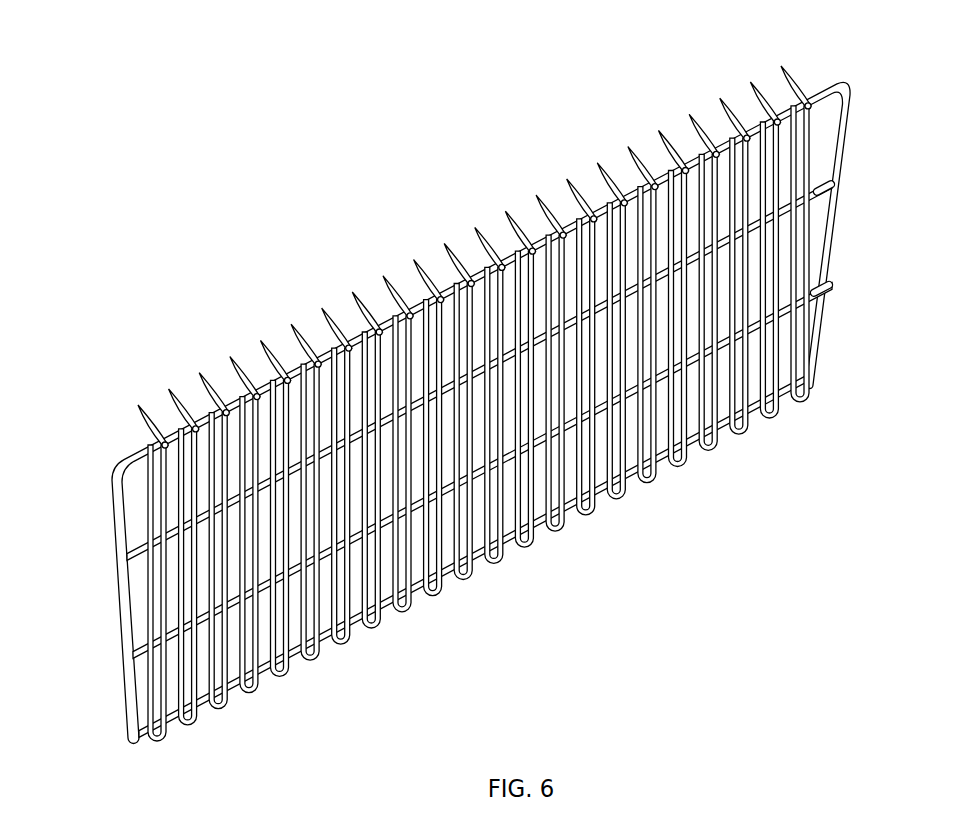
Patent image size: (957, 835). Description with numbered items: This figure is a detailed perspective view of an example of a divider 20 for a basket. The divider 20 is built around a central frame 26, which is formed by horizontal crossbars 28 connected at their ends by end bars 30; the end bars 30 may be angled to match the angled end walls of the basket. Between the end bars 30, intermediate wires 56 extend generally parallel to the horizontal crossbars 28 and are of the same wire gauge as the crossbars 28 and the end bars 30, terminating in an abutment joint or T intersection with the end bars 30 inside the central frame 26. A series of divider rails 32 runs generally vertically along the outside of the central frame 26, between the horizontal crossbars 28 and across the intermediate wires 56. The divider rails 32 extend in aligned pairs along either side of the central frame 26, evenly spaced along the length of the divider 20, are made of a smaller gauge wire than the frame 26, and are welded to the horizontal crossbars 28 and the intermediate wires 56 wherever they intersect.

The divider 20 is at (488, 376).
The central frame 26 is at (488, 376).
The horizontal crossbars 28 is at (825, 83).
The end bars 30 is at (112, 519).
The divider rails 32 is at (470, 384).
The intermediate wires 56 is at (818, 190).